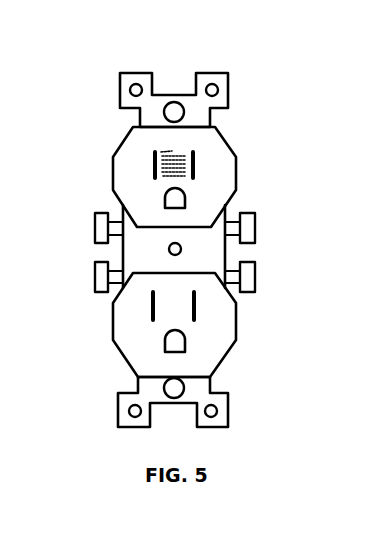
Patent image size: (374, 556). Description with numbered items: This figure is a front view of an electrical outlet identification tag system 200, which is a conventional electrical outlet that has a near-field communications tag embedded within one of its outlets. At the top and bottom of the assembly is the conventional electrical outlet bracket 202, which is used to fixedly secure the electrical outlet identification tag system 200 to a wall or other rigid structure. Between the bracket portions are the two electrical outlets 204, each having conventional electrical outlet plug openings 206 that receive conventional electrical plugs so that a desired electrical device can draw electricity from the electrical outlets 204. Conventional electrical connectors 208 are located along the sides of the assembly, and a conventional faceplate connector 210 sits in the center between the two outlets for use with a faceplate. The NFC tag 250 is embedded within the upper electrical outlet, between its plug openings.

The electrical outlet identification tag system 200 is at (252, 69).
The electrical outlet bracket 202 is at (118, 78).
The electrical outlets 204 is at (236, 172).
The electrical outlet plug openings 206 is at (197, 310).
The electrical connectors 208 is at (94, 228).
The faceplate connector 210 is at (181, 249).
The NFC tag 250 is at (104, 157).